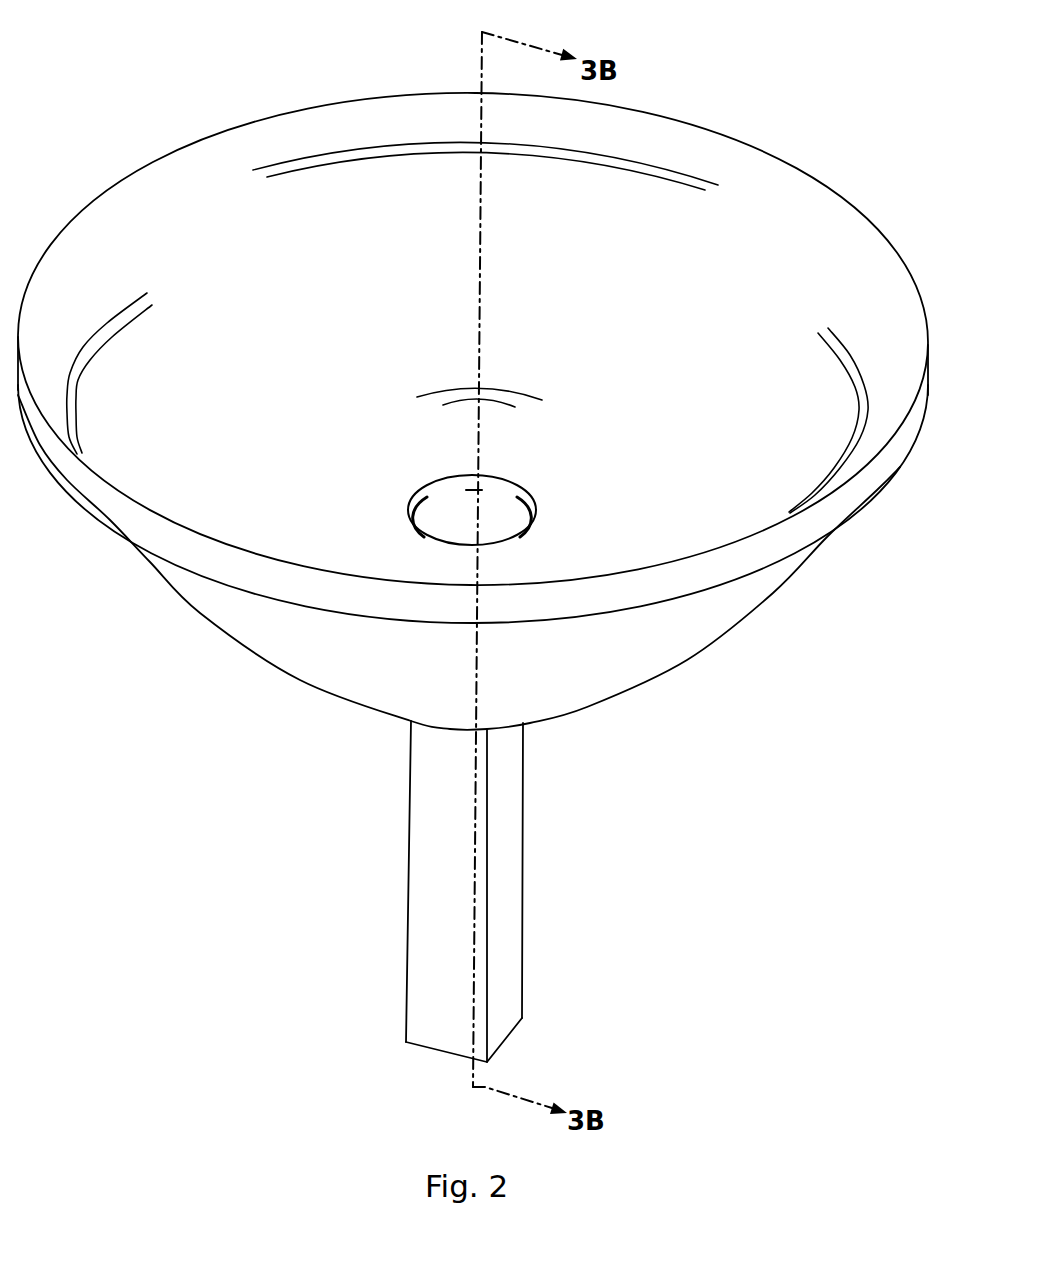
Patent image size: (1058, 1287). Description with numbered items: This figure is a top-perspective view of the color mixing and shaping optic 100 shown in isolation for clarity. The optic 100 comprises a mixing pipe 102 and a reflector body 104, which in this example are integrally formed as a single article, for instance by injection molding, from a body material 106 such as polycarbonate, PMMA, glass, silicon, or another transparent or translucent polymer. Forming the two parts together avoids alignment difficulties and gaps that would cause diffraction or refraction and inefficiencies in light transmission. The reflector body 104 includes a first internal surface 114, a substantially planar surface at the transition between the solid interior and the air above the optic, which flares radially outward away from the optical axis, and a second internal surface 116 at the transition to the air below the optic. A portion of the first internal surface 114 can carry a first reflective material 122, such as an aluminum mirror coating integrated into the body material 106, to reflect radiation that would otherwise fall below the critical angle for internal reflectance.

The color mixing and shaping optic 100 is at (142, 143).
The mixing pipe 102 is at (532, 890).
The reflector body 104 is at (474, 415).
The body material 106 is at (474, 575).
The first internal surface 114 is at (735, 374).
The second internal surface 116 is at (640, 662).
The first reflective material 122 is at (428, 483).